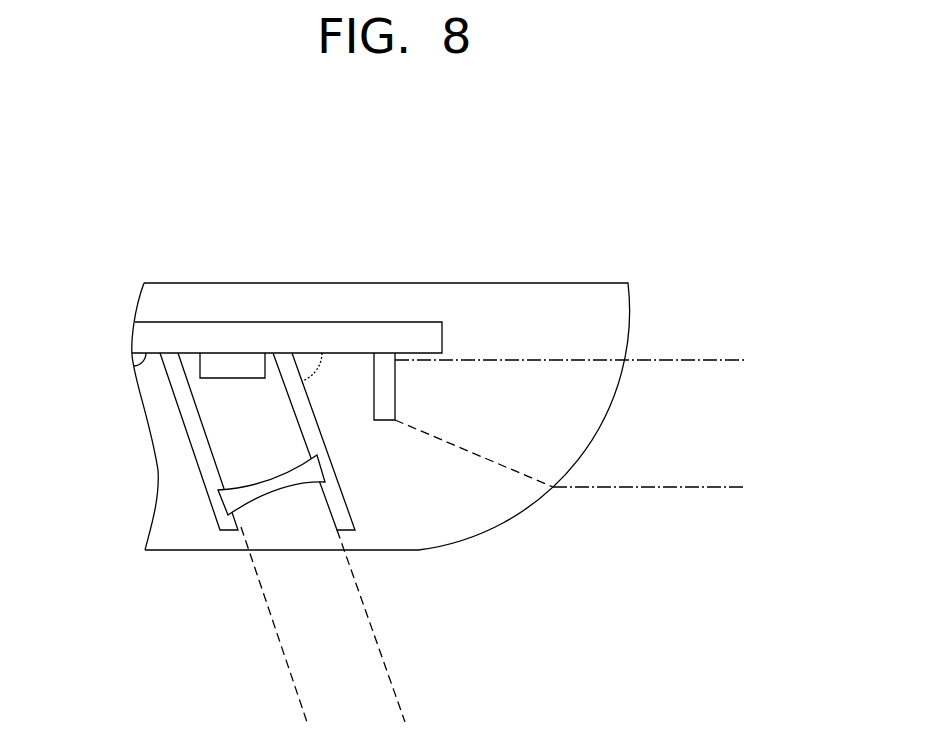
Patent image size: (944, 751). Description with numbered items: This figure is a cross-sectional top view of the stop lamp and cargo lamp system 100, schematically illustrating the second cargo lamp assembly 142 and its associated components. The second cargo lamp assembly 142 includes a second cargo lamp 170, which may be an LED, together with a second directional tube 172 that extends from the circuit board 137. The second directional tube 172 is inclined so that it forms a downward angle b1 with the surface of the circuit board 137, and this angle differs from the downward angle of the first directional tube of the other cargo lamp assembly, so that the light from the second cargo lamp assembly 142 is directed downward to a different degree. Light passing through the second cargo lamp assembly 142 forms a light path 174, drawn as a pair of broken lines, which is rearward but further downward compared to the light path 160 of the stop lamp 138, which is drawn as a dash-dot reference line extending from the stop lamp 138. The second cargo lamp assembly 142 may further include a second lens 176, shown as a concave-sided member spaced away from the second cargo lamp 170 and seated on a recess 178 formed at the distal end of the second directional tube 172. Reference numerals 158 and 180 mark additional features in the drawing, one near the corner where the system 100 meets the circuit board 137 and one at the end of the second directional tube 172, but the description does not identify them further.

The stop lamp and cargo lamp system 100 is at (565, 225).
The circuit board 137 is at (310, 337).
The stop lamp 138 is at (378, 421).
The second cargo lamp assembly 142 is at (196, 453).
The corner angle 158 is at (132, 365).
The light path 160 is at (693, 359).
The second cargo lamp 170 is at (228, 367).
The second directional tube 172 is at (187, 405).
The light path 174 is at (391, 683).
The second lens 176 is at (277, 487).
The recess 178 is at (226, 508).
The second end portion 180 is at (229, 531).
The downward angle b1 is at (324, 372).